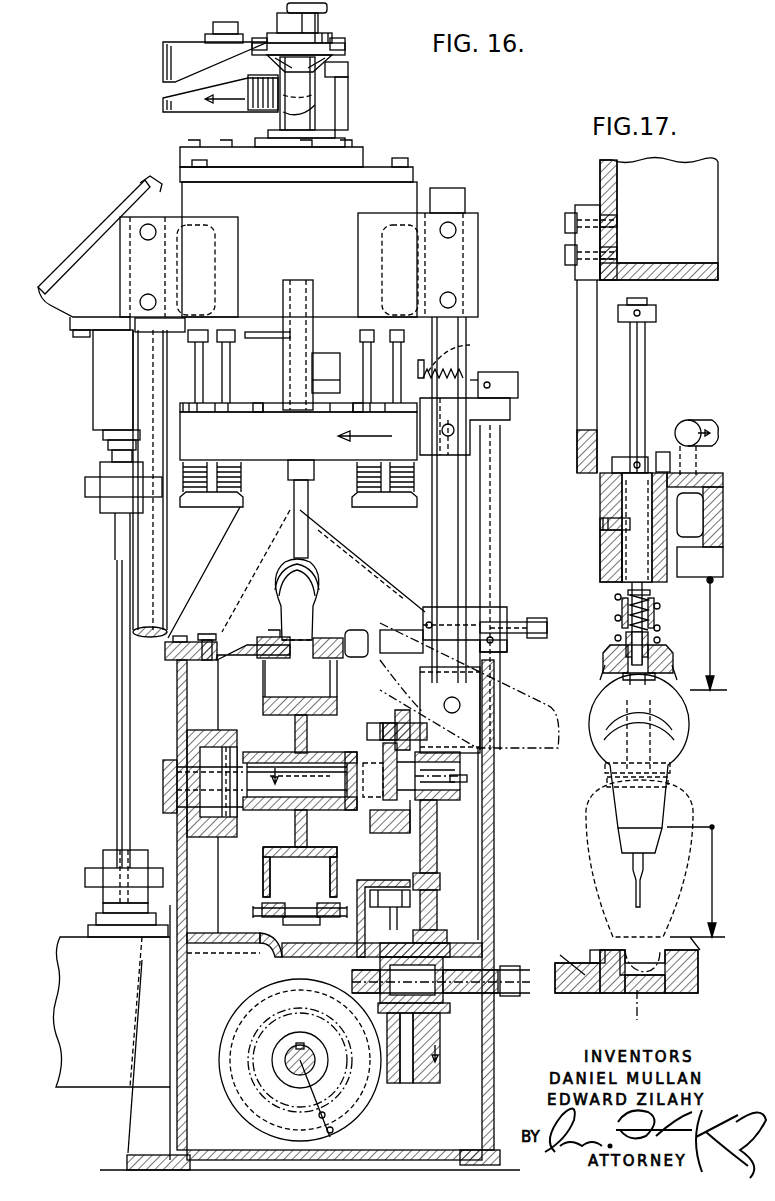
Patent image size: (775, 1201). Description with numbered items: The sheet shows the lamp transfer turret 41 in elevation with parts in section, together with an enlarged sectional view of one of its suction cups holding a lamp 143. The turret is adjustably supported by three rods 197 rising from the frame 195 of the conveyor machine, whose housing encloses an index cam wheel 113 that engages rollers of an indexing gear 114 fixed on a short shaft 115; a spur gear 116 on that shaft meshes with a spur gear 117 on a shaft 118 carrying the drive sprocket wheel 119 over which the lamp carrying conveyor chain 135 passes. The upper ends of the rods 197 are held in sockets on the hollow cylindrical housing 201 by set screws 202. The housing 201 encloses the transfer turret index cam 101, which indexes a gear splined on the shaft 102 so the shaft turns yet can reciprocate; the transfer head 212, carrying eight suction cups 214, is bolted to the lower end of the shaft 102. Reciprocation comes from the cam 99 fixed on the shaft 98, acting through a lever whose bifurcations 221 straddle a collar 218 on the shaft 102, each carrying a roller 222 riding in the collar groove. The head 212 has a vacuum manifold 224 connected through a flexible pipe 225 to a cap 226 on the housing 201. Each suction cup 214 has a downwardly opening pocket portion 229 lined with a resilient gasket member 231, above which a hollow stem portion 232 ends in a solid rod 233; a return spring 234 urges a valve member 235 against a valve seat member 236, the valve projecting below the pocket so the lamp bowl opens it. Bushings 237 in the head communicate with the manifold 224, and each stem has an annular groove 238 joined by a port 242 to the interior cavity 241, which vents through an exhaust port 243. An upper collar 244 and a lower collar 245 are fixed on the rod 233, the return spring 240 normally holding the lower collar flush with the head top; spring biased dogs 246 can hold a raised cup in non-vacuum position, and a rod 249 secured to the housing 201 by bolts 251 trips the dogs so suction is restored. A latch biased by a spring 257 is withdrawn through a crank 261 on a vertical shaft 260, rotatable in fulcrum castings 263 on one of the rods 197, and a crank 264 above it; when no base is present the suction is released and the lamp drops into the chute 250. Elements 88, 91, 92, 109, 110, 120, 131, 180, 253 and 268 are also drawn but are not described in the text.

In FIG. 16, the transfer turret 41 is at (113, 205).
In FIG. 17, the transfer turret 41 is at (590, 202).
In FIG. 16, the rod 88 is at (122, 818).
In FIG. 16, the collar 91 is at (98, 870).
In FIG. 16, the collar 92 is at (90, 500).
In FIG. 16, the shaft 98 is at (213, 24).
In FIG. 16, the cam wheel 99 is at (162, 62).
In FIG. 16, the transfer turret index cam 101 is at (340, 78).
In FIG. 16, the shaft 102 is at (327, 10).
In FIG. 16, the hub 109 is at (300, 1070).
In FIG. 16, the bolt 110 is at (305, 650).
In FIG. 16, the index cam wheel 113 is at (237, 1030).
In FIG. 16, the indexing gear 114 is at (385, 928).
In FIG. 16, the short shaft 115 is at (462, 1000).
In FIG. 16, the spur gear 116 is at (437, 910).
In FIG. 16, the spur gear 117 is at (437, 840).
In FIG. 16, the shaft 118 is at (462, 788).
In FIG. 16, the drive sprocket wheel 119 is at (337, 712).
In FIG. 16, the bolt 120 is at (332, 638).
In FIG. 17, the base 131 is at (572, 983).
In FIG. 16, the conveyor chain 135 is at (268, 633).
In FIG. 16, the lamp 143 is at (272, 590).
In FIG. 17, the lamp 143 is at (609, 738).
In FIG. 17, the exhaust tube 180 is at (633, 890).
In FIG. 16, the frame 195 is at (182, 708).
In FIG. 16, the rods 197 is at (452, 208).
In FIG. 16, the housing 201 is at (320, 248).
In FIG. 17, the housing 201 is at (676, 240).
In FIG. 16, the set screws 202 is at (457, 300).
In FIG. 16, the transfer head 212 is at (256, 459).
In FIG. 17, the transfer head 212 is at (598, 502).
In FIG. 17, the suction cups 214 is at (676, 655).
In FIG. 16, the collar 218 is at (332, 38).
In FIG. 16, the bifurcations 221 is at (345, 50).
In FIG. 16, the roller 222 is at (332, 60).
In FIG. 17, the vacuum manifold 224 is at (699, 521).
In FIG. 17, the flexible pipe 225 is at (702, 424).
In FIG. 16, the cap 226 is at (312, 345).
In FIG. 16, the pocket portion 229 is at (222, 507).
In FIG. 17, the pocket portion 229 is at (618, 668).
In FIG. 17, the gasket member 231 is at (636, 680).
In FIG. 17, the hollow stem portion 232 is at (652, 602).
In FIG. 16, the solid rod 233 is at (195, 390).
In FIG. 17, the solid rod 233 is at (640, 385).
In FIG. 17, the return spring 234 is at (660, 616).
In FIG. 17, the valve member 235 is at (620, 630).
In FIG. 17, the valve seat member 236 is at (614, 640).
In FIG. 17, the bushings 237 is at (602, 548).
In FIG. 17, the annular groove 238 is at (600, 525).
In FIG. 16, the return spring 240 is at (232, 487).
In FIG. 17, the return spring 240 is at (658, 633).
In FIG. 17, the hollow interior cavity 241 is at (622, 492).
In FIG. 17, the port 242 is at (663, 527).
In FIG. 17, the exhaust port 243 is at (600, 478).
In FIG. 16, the upper collar 244 is at (190, 343).
In FIG. 17, the upper collar 244 is at (656, 313).
In FIG. 17, the lower collar 245 is at (660, 450).
In FIG. 16, the dogs 246 is at (258, 412).
In FIG. 16, the rod 249 is at (272, 370).
In FIG. 17, the rod 249 is at (583, 357).
In FIG. 16, the chute 250 is at (552, 740).
In FIG. 17, the bolts 251 is at (566, 264).
In FIG. 16, the bracket 253 is at (528, 618).
In FIG. 16, the spring 257 is at (448, 370).
In FIG. 16, the vertical shaft 260 is at (500, 537).
In FIG. 16, the crank 261 is at (522, 648).
In FIG. 16, the fulcrum castings 263 is at (500, 408).
In FIG. 16, the crank 264 is at (512, 384).
In FIG. 17, the base plate 268 is at (682, 945).